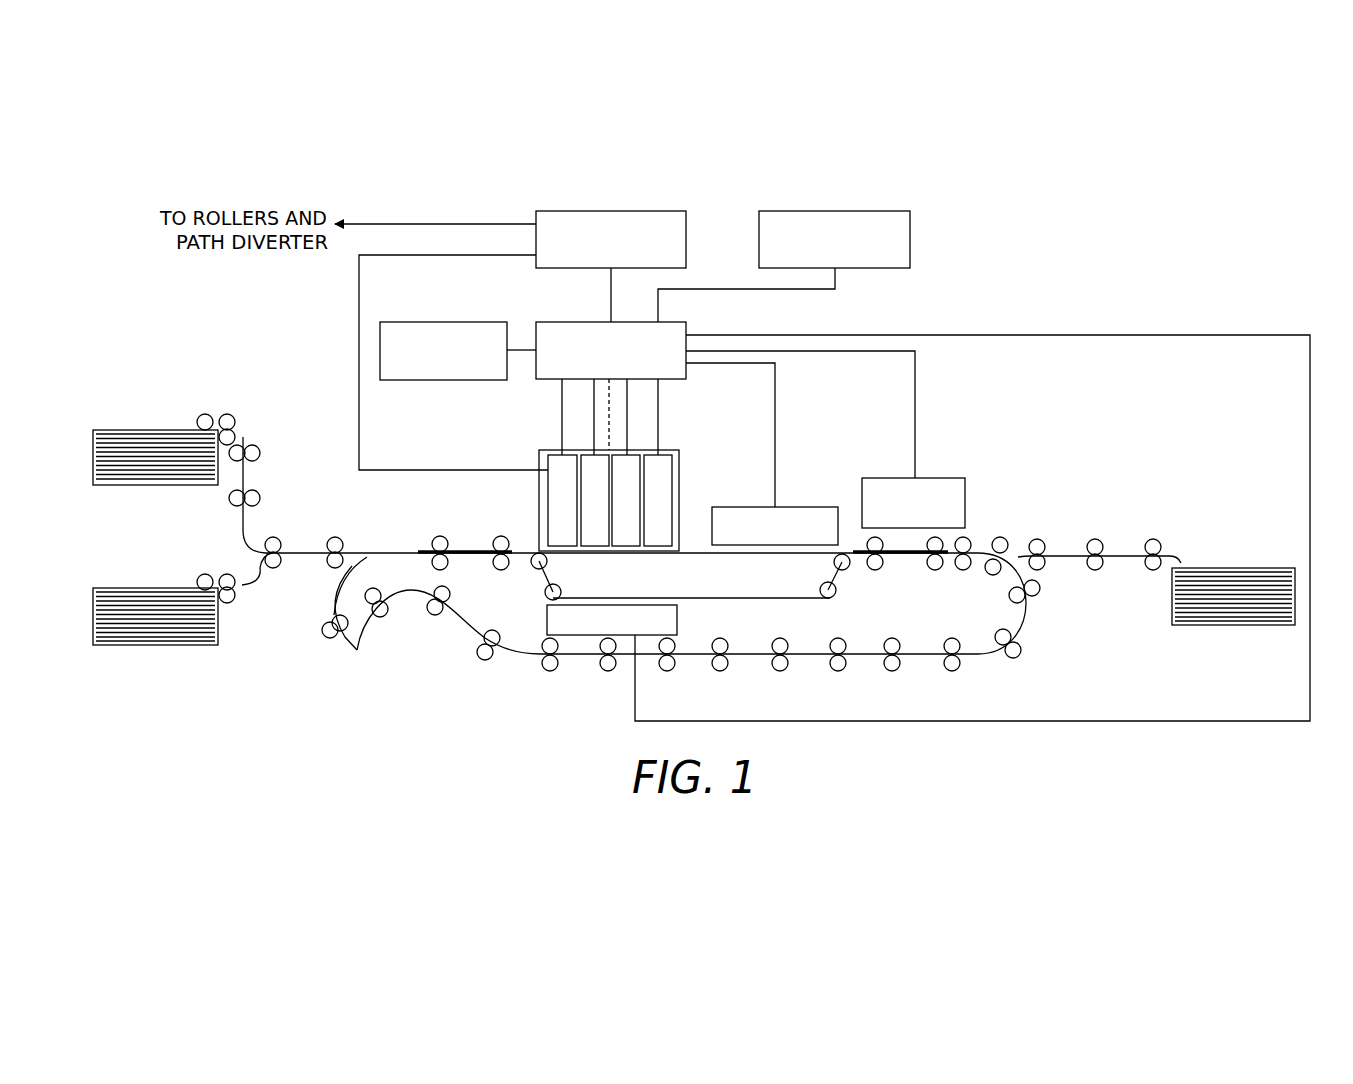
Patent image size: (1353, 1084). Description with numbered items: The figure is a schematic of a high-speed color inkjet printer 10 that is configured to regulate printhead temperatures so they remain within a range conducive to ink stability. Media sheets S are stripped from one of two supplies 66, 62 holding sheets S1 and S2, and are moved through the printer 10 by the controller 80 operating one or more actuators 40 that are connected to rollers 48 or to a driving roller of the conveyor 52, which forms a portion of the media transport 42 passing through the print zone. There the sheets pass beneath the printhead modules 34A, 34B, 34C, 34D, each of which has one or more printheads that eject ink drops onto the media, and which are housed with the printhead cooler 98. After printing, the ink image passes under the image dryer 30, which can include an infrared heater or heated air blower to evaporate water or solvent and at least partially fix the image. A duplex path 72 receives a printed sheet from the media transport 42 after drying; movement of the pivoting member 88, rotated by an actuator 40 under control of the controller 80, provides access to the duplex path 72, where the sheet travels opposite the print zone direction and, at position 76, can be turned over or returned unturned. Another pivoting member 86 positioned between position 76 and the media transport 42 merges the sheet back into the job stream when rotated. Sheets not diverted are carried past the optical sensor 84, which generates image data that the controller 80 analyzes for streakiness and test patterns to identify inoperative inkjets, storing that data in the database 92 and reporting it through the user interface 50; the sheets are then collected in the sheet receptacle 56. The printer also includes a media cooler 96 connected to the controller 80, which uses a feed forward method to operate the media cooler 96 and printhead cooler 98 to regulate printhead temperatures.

The color inkjet printer 10 is at (1022, 302).
The image dryer 30 is at (790, 507).
The printhead module 34A is at (548, 492).
The printhead module 34B is at (590, 455).
The printhead module 34C is at (630, 455).
The printhead module 34D is at (672, 497).
The actuators 40 is at (686, 240).
The media transport 42 is at (715, 569).
The rollers 48 is at (260, 495).
The user interface 50 is at (451, 322).
The conveyor 52 is at (836, 600).
The sheet receptacle 56 is at (1232, 625).
The media sheet supply 62 is at (158, 646).
The media sheet supply 66 is at (158, 486).
The duplex path 72 is at (924, 660).
The turnover position 76 is at (355, 655).
The controller 80 is at (564, 322).
The optical sensor 84 is at (950, 478).
The pivoting member 86 is at (383, 557).
The pivoting member 88 is at (1020, 558).
The database 92 is at (910, 240).
The media cooler 96 is at (547, 619).
The printhead cooler 98 is at (613, 485).
The media sheet S is at (468, 550).
The media sheets of first supply S1 is at (155, 430).
The media sheets of second supply S2 is at (155, 588).